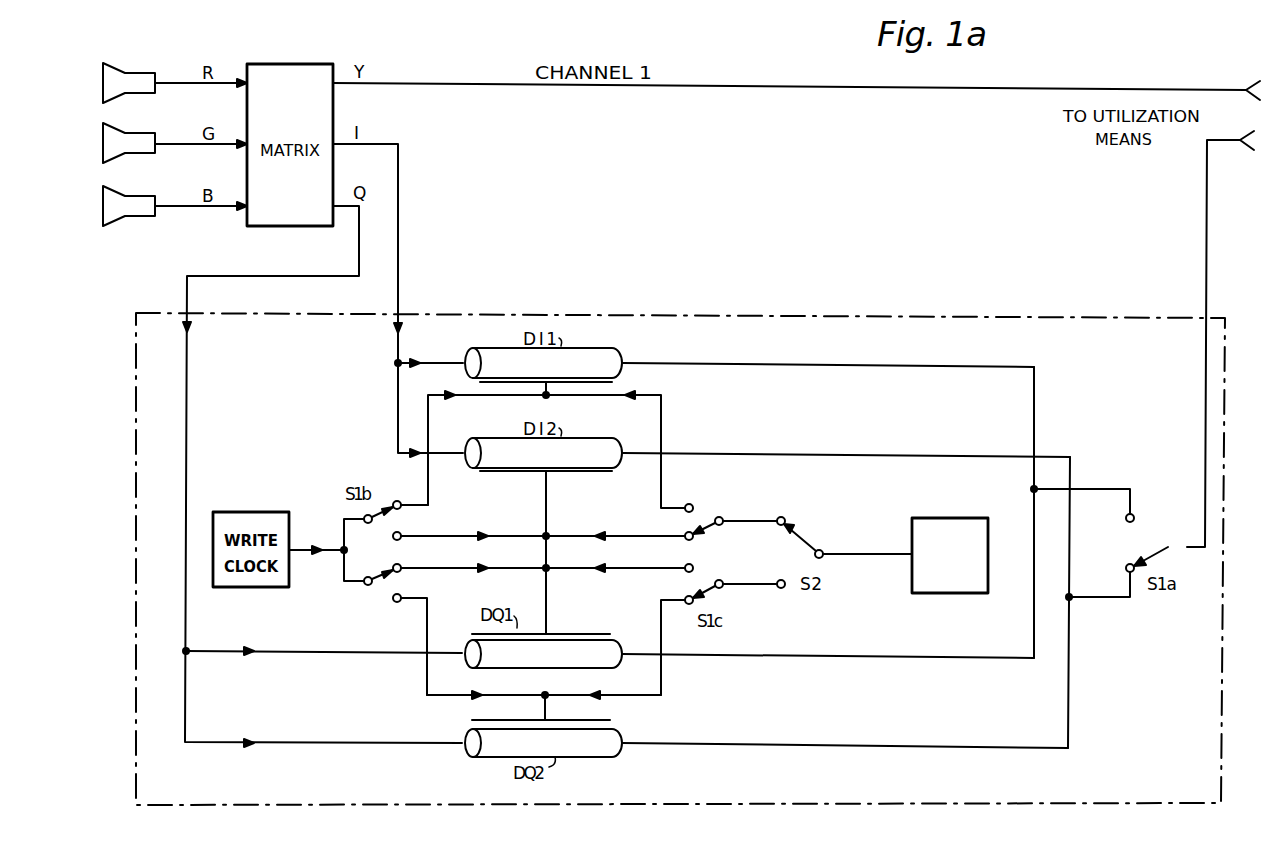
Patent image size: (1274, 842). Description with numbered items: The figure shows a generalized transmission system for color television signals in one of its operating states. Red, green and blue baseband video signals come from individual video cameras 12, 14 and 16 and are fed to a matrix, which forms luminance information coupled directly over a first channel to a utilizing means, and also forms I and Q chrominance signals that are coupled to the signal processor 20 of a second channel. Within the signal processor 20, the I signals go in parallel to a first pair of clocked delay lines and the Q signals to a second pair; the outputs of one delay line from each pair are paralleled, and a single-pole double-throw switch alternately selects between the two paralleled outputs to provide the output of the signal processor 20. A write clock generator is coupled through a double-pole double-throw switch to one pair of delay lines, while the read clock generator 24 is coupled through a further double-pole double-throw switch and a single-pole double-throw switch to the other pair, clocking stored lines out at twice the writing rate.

The video camera 12 is at (135, 71).
The video camera 14 is at (135, 135).
The video camera 16 is at (135, 197).
The signal processor 20 is at (680, 543).
The read clock generator 24 is at (950, 532).